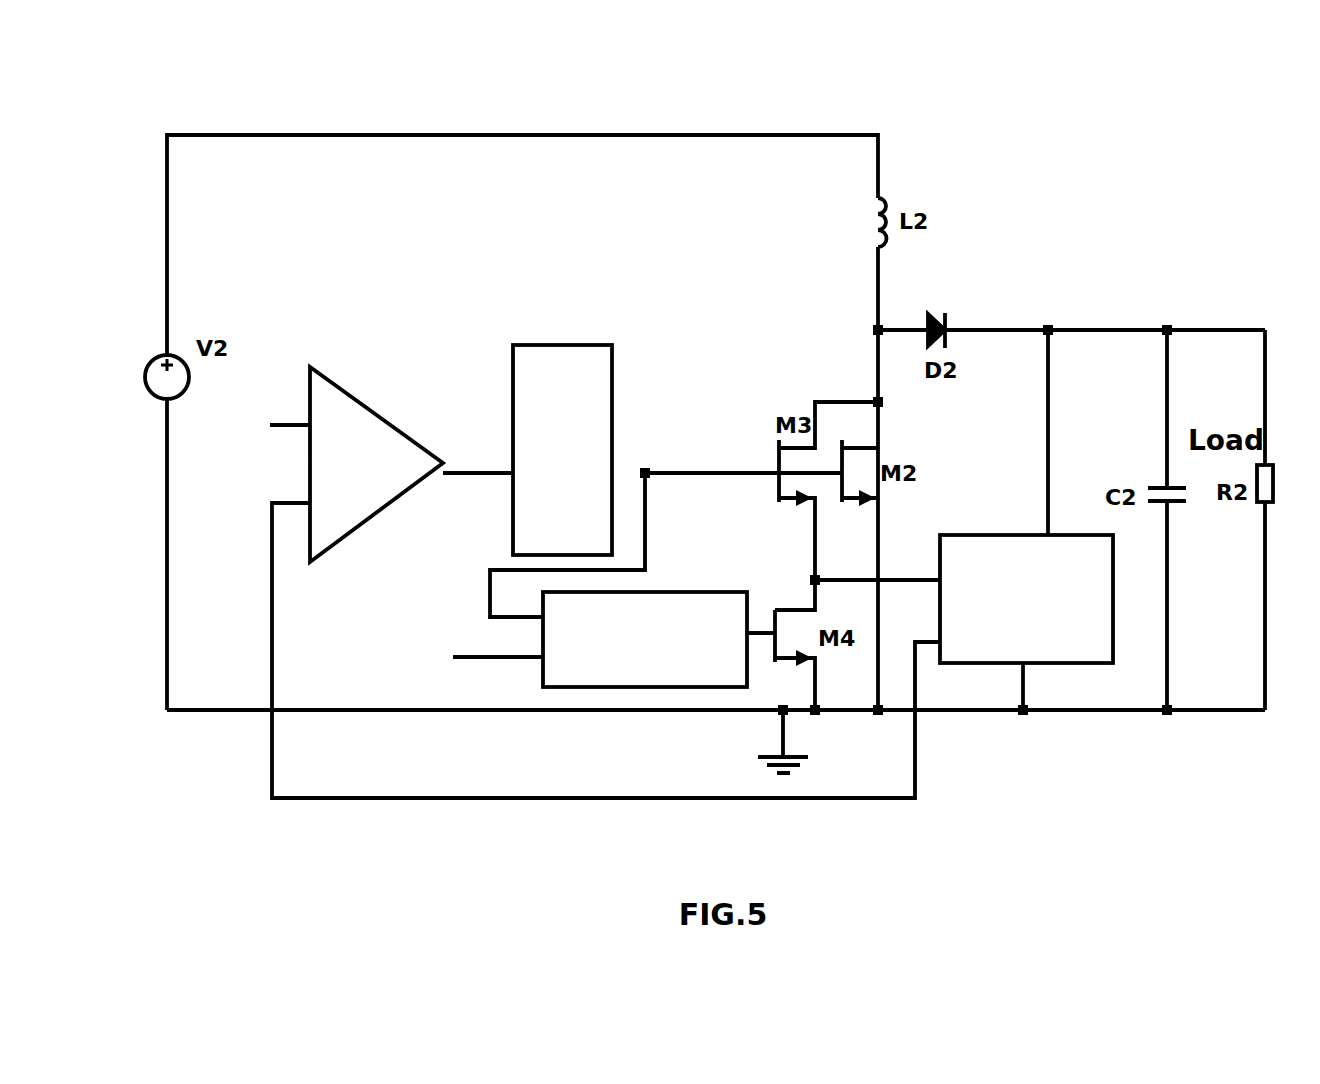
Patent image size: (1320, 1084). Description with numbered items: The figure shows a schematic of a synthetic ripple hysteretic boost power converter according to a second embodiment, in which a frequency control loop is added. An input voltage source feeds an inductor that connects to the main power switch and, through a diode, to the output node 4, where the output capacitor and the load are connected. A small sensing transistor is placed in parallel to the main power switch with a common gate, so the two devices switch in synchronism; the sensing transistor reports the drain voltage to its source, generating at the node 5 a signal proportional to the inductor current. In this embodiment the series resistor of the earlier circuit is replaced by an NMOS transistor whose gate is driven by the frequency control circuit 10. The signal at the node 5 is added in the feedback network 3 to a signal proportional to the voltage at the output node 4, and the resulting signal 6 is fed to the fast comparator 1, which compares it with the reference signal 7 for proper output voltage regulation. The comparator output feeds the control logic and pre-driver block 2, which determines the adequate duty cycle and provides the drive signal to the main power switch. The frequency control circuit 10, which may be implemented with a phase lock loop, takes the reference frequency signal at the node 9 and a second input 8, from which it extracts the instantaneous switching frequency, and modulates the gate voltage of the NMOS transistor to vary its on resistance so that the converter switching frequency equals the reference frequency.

The fast comparator 1 is at (347, 392).
The control logic and pre-driver block 2 is at (586, 343).
The feedback network 3 is at (1072, 663).
The output node 4 is at (1073, 330).
The node 5 is at (813, 565).
The resulting signal 6 is at (638, 797).
The reference signal 7 is at (270, 423).
The second input 8 is at (738, 470).
The reference frequency signal node 9 is at (472, 652).
The frequency control circuit 10 is at (730, 592).